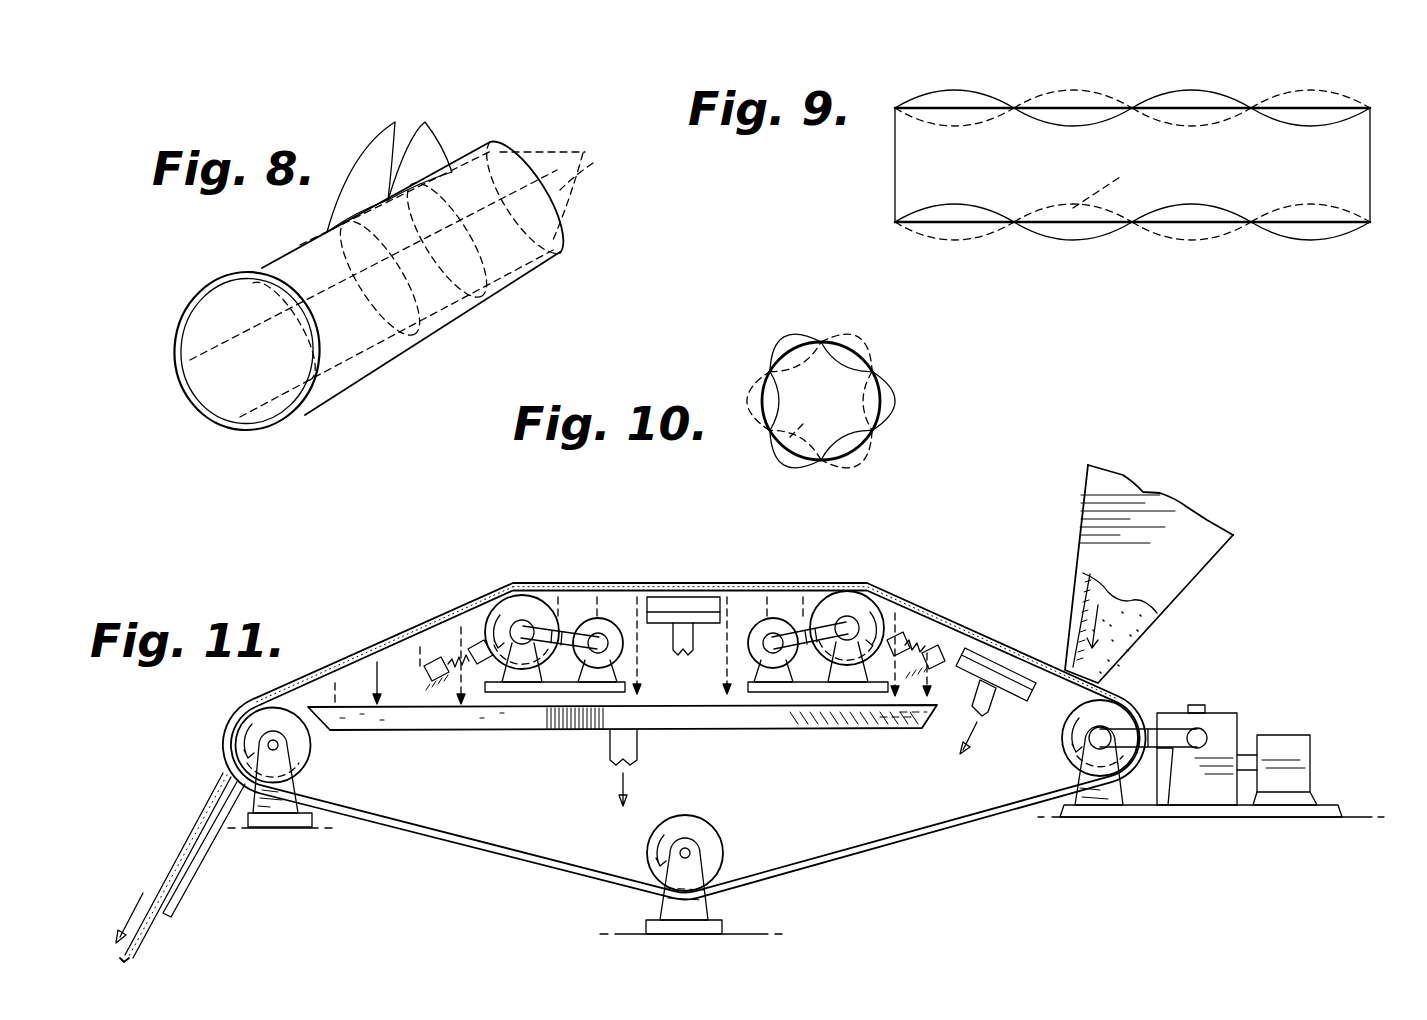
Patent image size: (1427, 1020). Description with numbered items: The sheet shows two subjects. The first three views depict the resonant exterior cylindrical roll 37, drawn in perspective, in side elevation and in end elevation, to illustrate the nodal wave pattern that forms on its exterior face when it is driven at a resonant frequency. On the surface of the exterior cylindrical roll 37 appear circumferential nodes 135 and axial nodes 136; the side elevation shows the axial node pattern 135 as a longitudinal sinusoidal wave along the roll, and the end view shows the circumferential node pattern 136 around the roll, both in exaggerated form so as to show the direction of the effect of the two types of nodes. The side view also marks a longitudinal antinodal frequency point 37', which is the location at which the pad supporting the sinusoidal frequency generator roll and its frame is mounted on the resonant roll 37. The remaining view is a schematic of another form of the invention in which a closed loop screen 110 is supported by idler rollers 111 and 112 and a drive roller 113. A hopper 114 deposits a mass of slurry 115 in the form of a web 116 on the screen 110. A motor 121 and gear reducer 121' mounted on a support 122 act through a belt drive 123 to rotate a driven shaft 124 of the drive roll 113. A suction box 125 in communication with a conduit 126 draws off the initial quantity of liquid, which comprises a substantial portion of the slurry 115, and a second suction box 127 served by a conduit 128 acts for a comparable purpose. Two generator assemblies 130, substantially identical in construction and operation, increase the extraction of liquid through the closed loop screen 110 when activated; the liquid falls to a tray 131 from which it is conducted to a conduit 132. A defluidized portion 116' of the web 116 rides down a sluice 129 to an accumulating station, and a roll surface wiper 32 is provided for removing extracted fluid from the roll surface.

In FIG. 8, the exterior cylindrical roll 37 is at (366, 298).
In FIG. 9, the exterior cylindrical roll 37 is at (1132, 130).
In FIG. 10, the exterior cylindrical roll 37 is at (862, 401).
In FIG. 9, the longitudinal antinodal frequency point 37' is at (1116, 189).
In FIG. 10, the longitudinal antinodal frequency point 37' is at (812, 418).
In FIG. 8, the circumferential nodes 135 is at (567, 191).
In FIG. 9, the circumferential nodes 135 is at (1128, 224).
In FIG. 8, the axial nodes 136 is at (389, 166).
In FIG. 10, the axial nodes 136 is at (821, 342).
In FIG. 11, the closed loop screen 110 is at (488, 847).
In FIG. 11, the idler roller 111 is at (297, 752).
In FIG. 11, the idler roller 112 is at (714, 857).
In FIG. 11, the drive roller 113 is at (1070, 756).
In FIG. 11, the hopper 114 is at (1157, 507).
In FIG. 11, the slurry 115 is at (1110, 620).
In FIG. 11, the web 116 is at (578, 760).
In FIG. 11, the defluidized portion of the web 116' is at (202, 941).
In FIG. 11, the motor 121 is at (1312, 749).
In FIG. 11, the gear reducer 121' is at (1226, 730).
In FIG. 11, the support 122 is at (1256, 808).
In FIG. 11, the belt drive 123 is at (1170, 750).
In FIG. 11, the driven shaft 124 is at (1097, 749).
In FIG. 11, the suction box 125 is at (1016, 682).
In FIG. 11, the conduit 126 is at (987, 690).
In FIG. 11, the second suction box 127 is at (690, 607).
In FIG. 11, the conduit 128 is at (683, 645).
In FIG. 11, the sluice 129 is at (197, 858).
In FIG. 11, the generator assemblies 130 is at (519, 575).
In FIG. 11, the tray 131 is at (500, 722).
In FIG. 11, the conduit 132 is at (616, 745).
In FIG. 11, the roll surface wiper 32 is at (428, 684).